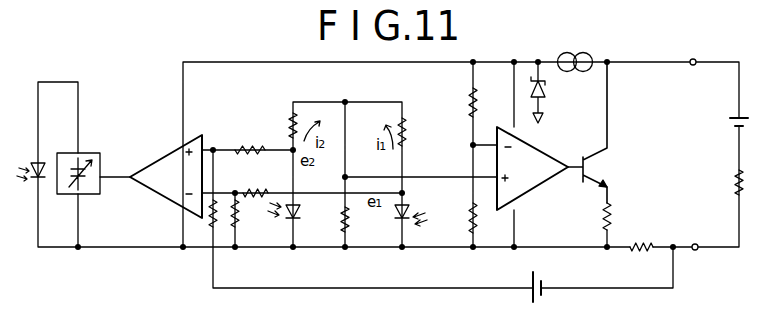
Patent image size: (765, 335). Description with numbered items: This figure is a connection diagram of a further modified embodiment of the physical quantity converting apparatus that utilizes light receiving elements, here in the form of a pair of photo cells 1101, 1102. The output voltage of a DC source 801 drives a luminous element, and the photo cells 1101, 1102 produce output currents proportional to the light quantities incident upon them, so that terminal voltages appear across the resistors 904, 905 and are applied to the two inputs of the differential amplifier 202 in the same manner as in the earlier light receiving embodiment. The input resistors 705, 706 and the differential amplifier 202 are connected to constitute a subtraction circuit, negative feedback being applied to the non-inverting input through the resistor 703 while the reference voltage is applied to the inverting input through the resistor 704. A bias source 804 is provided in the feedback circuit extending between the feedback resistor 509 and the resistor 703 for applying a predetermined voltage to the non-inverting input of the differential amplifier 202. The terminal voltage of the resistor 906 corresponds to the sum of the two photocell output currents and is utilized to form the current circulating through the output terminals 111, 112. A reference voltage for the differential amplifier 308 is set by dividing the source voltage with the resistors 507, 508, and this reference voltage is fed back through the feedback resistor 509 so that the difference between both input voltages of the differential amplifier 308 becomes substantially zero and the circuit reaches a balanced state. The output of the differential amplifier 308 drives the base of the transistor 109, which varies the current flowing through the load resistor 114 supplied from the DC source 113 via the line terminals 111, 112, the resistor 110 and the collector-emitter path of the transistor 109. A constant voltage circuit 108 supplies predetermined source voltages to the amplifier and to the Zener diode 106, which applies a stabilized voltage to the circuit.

The DC source 801 is at (93, 165).
The differential amplifier 202 is at (166, 176).
The resistor 703 is at (202, 223).
The resistor 704 is at (251, 216).
The input resistor 705 is at (250, 141).
The input resistor 706 is at (257, 183).
The resistor 904 is at (291, 130).
The resistor 905 is at (418, 132).
The resistor 906 is at (360, 221).
The photo cell 1101 is at (419, 205).
The photo cell 1102 is at (303, 212).
The resistor 507 is at (460, 102).
The resistor 508 is at (460, 219).
The differential amplifier 308 is at (532, 168).
The Zener diode 106 is at (553, 92).
The constant voltage circuit 108 is at (575, 53).
The transistor 109 is at (599, 132).
The resistor 110 is at (620, 225).
The line terminal 111 is at (696, 49).
The line terminal 112 is at (698, 236).
The DC source 113 is at (729, 112).
The load resistor 114 is at (728, 182).
The feedback resistor 509 is at (643, 259).
The bias source 804 is at (538, 298).